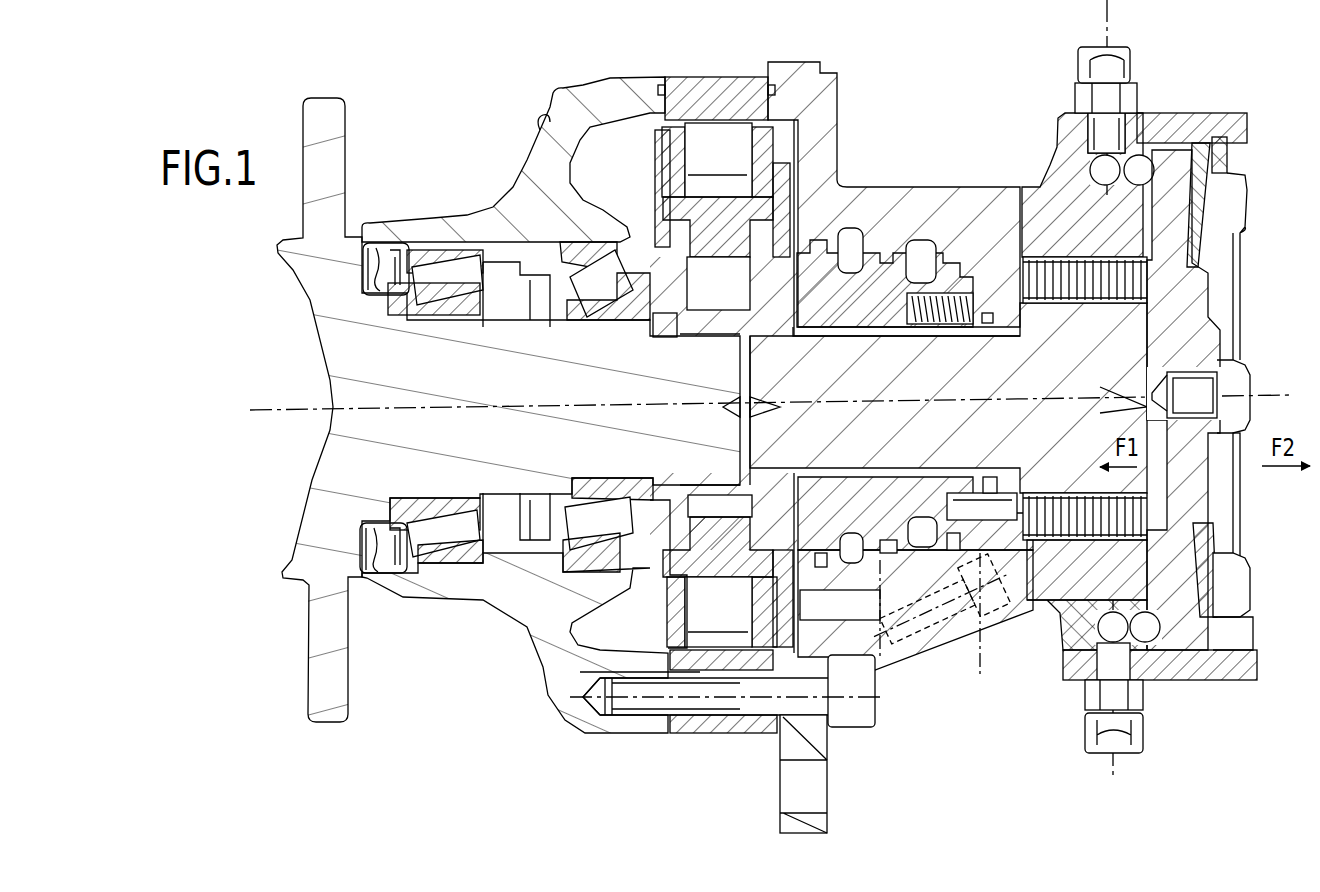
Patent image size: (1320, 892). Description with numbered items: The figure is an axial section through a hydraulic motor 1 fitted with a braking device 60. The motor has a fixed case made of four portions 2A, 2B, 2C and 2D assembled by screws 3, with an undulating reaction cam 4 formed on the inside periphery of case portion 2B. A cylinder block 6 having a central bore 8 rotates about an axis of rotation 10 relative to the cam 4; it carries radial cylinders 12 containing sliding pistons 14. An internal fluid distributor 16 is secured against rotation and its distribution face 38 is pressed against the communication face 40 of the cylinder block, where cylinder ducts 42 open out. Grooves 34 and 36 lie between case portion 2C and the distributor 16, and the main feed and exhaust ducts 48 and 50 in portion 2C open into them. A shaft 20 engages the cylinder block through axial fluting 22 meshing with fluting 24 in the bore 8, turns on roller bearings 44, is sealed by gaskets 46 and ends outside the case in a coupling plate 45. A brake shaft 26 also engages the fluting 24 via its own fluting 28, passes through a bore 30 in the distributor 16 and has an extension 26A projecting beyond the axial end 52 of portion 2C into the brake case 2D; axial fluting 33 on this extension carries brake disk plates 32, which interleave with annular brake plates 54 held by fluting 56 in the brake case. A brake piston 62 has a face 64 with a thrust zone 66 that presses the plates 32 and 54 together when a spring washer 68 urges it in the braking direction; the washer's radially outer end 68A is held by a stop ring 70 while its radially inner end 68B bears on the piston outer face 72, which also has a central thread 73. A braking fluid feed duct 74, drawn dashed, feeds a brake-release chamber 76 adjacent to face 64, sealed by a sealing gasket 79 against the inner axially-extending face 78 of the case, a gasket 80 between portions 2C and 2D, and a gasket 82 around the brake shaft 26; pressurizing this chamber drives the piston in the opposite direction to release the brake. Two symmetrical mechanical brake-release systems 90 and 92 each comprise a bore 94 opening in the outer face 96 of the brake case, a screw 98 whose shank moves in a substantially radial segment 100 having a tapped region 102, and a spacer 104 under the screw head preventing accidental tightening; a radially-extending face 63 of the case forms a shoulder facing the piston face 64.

The hydraulic motor 1 is at (832, 45).
The case portion 2A is at (597, 100).
The case portion 2B is at (688, 105).
The case portion 2C is at (832, 125).
The brake case 2D is at (1060, 145).
The screws 3 is at (700, 705).
The undulating reaction cam 4 is at (740, 115).
The cylinder block 6 is at (693, 338).
The central bore 8 is at (730, 345).
The axis of rotation 10 is at (268, 410).
The radial cylinders 12 is at (650, 193).
The pistons 14 is at (700, 180).
The internal fluid distributor 16 is at (840, 480).
The shaft 20 is at (390, 438).
The axial fluting 22 is at (653, 343).
The fluting 24 is at (700, 468).
The brake shaft 26 is at (944, 440).
The extension 26A is at (1077, 427).
The fluting 28 is at (798, 337).
The bore 30 is at (890, 463).
The brake disk plates 32 is at (1047, 313).
The axial fluting 33 is at (1135, 313).
The groove 34 is at (853, 237).
The groove 36 is at (923, 260).
The distribution face 38 is at (827, 340).
The communication face 40 is at (817, 337).
The cylinder ducts 42 is at (777, 468).
The roller bearings 44 is at (448, 313).
The coupling plate 45 is at (338, 187).
The gaskets 46 is at (365, 307).
The main fluid feed duct 48 is at (925, 633).
The fluid exhaust duct 50 is at (975, 630).
The axial end 52 is at (1042, 173).
The annular brake plates 54 is at (1082, 263).
The fluting 56 is at (1040, 253).
The braking device 60 is at (1155, 48).
The brake piston 62 is at (1190, 295).
The radially-extending face 63 is at (1150, 175).
The face 64 is at (1160, 195).
The thrust zone 66 is at (1145, 215).
The spring washer 68 is at (1210, 210).
The radially outer end 68A is at (1213, 112).
The radially inner end 68B is at (1248, 235).
The stop ring 70 is at (1235, 160).
The outer face 72 is at (1222, 320).
The central thread 73 is at (1210, 385).
The braking fluid feed duct 74 is at (1060, 630).
The brake-release chamber 76 is at (1160, 572).
The inner axially-extending face 78 is at (1185, 660).
The sealing gasket 79 is at (1197, 672).
The gasket 80 is at (1043, 550).
The gasket 82 is at (993, 478).
The brake-release system 90 is at (1145, 90).
The brake-release system 92 is at (1153, 730).
The bore 94 is at (1077, 685).
The outer face 96 is at (1262, 695).
The screw 98 is at (1123, 47).
The segment 100 is at (1095, 130).
The tapped region 102 is at (1165, 135).
The spacer 104 is at (1135, 110).